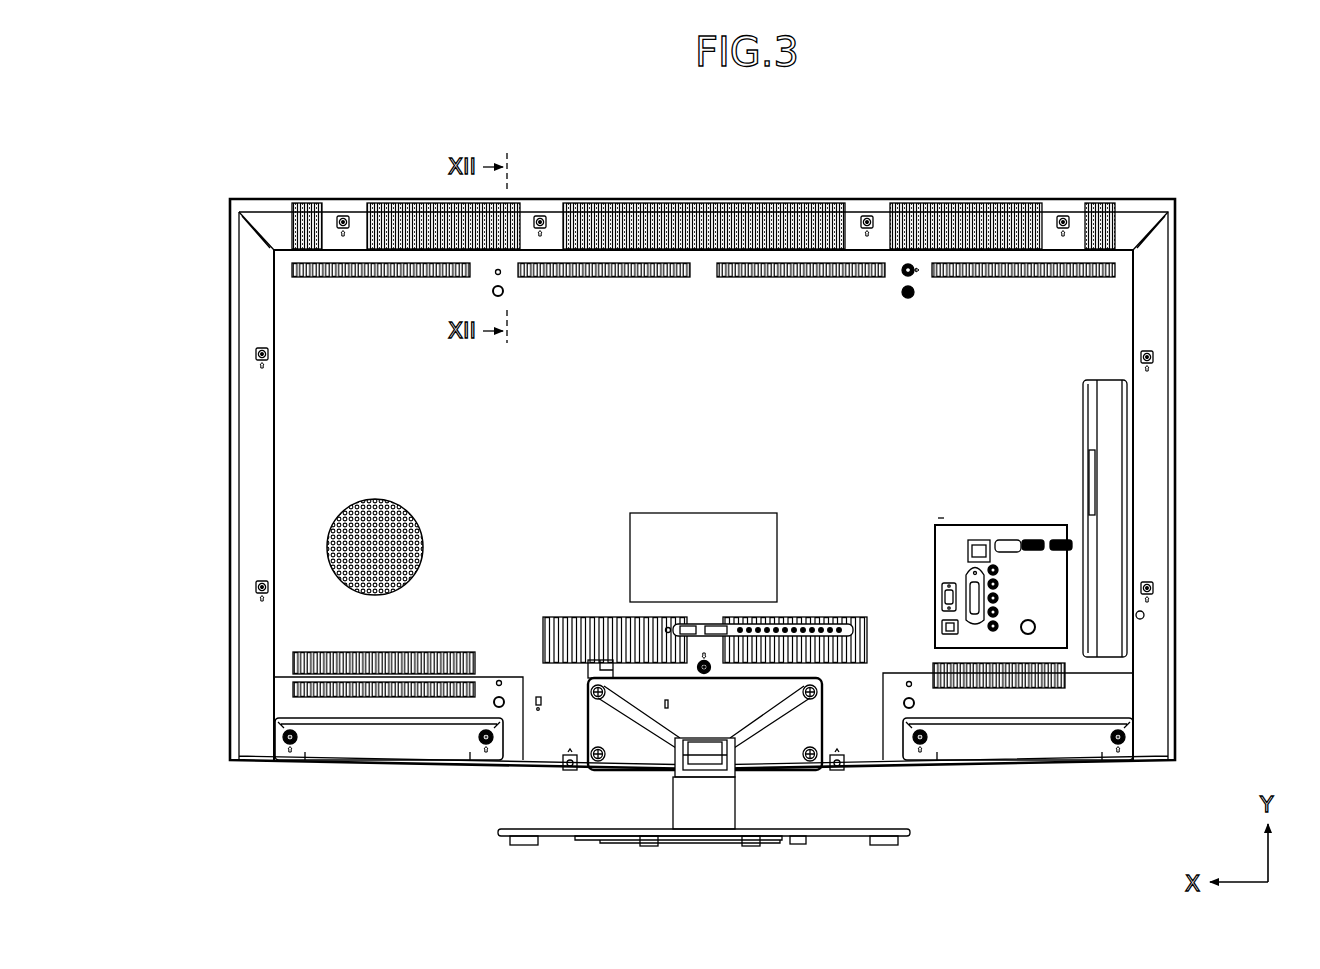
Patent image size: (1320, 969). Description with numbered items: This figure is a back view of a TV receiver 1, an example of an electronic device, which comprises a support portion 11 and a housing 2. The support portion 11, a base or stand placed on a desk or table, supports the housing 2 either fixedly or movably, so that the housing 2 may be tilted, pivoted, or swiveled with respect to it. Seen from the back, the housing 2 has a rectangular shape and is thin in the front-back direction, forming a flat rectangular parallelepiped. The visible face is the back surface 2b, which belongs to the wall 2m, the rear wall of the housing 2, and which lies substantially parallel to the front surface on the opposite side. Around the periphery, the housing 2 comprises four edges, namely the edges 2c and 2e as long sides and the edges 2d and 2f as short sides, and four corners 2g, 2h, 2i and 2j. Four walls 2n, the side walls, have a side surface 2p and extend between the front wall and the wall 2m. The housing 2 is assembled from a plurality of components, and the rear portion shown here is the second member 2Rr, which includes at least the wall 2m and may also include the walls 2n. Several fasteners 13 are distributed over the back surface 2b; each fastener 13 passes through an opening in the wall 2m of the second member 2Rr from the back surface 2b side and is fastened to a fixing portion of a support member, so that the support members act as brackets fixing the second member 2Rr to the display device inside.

The TV receiver 1 is at (946, 120).
The housing 2 is at (738, 443).
The second member 2Rr is at (428, 197).
The back surface 2b is at (210, 500).
The wall 2m is at (288, 434).
The edge 2c is at (703, 213).
The edge 2d is at (230, 500).
The edge 2e is at (958, 771).
The edge 2f is at (1176, 530).
The side surface 2p is at (703, 213).
The walls 2n is at (708, 199).
The corner 2g is at (1176, 198).
The corner 2h is at (230, 198).
The corner 2i is at (230, 763).
The corner 2j is at (1177, 763).
The support portion 11 is at (822, 840).
The fastener 13 is at (343, 214).